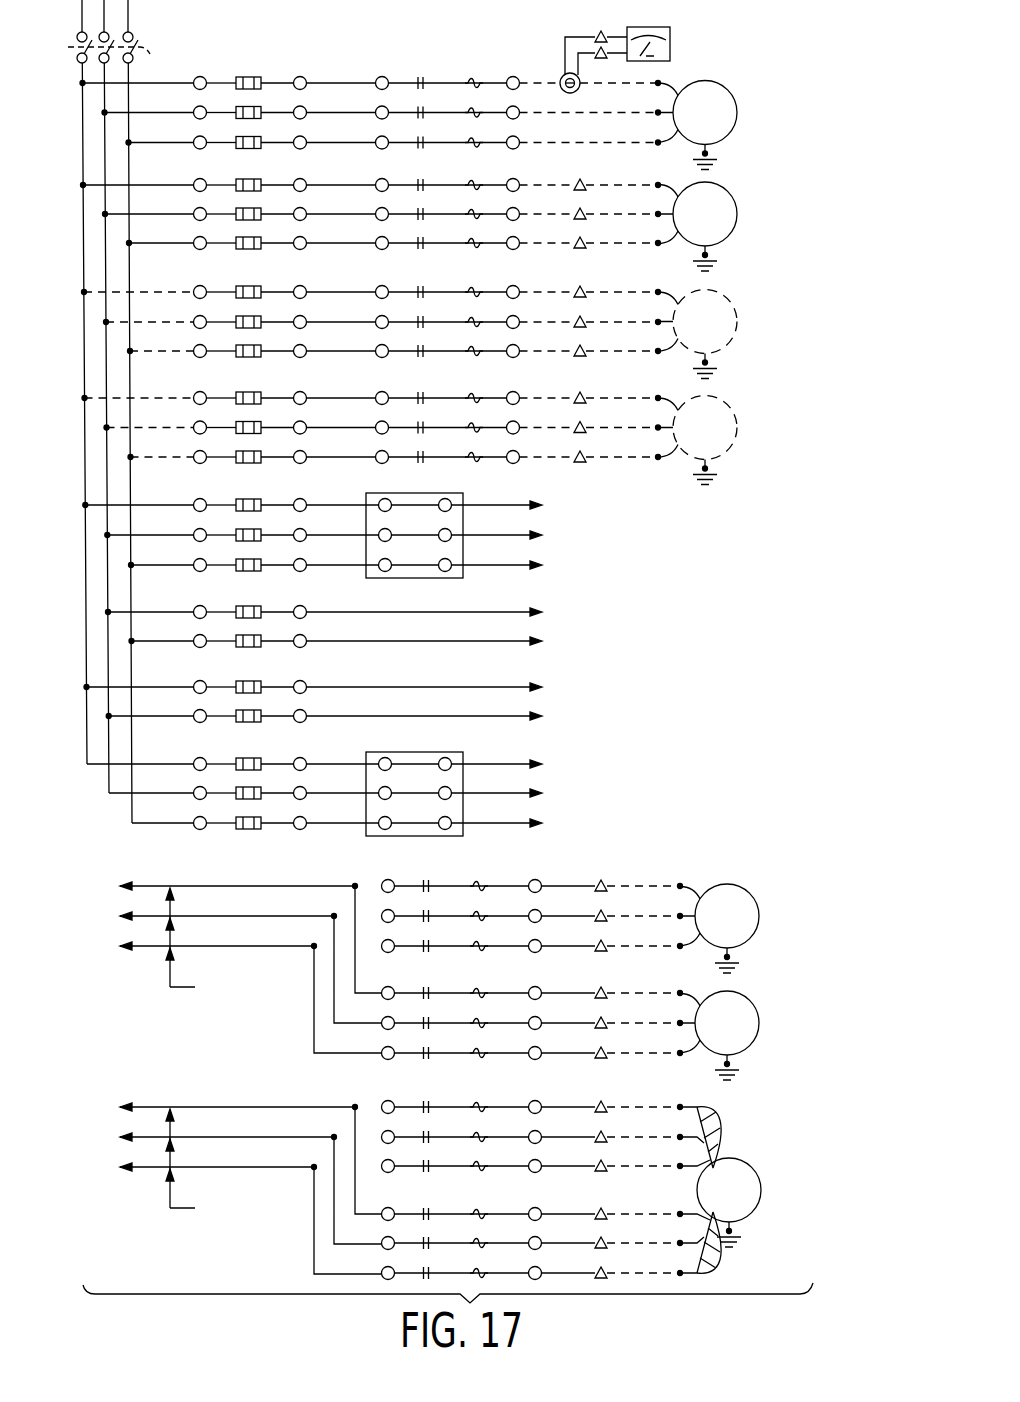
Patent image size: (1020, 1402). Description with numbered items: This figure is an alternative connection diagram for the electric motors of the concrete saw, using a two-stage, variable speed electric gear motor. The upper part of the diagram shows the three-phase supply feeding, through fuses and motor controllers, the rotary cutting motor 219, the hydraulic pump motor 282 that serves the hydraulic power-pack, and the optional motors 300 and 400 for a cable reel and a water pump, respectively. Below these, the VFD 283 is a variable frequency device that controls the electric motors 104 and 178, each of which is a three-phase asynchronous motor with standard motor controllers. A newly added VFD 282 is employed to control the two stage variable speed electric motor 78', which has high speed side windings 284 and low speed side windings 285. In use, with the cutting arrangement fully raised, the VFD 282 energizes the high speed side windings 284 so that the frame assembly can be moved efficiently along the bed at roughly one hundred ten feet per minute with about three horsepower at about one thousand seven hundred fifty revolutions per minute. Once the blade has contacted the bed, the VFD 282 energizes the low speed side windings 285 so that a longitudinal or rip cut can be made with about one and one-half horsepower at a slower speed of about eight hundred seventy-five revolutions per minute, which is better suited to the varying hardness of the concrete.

The rotary cutting motor 219 is at (722, 85).
The hydraulic pump motor / VFD 282 is at (725, 187).
The cable reel motor 300 is at (722, 292).
The water pump motor 400 is at (722, 398).
The VFD 283 is at (397, 493).
The electric motor 178 is at (752, 887).
The electric motor 104 is at (750, 996).
The two stage variable speed electric motor 78' is at (763, 1196).
The low speed side windings 285 is at (721, 1113).
The high speed side windings 284 is at (721, 1266).